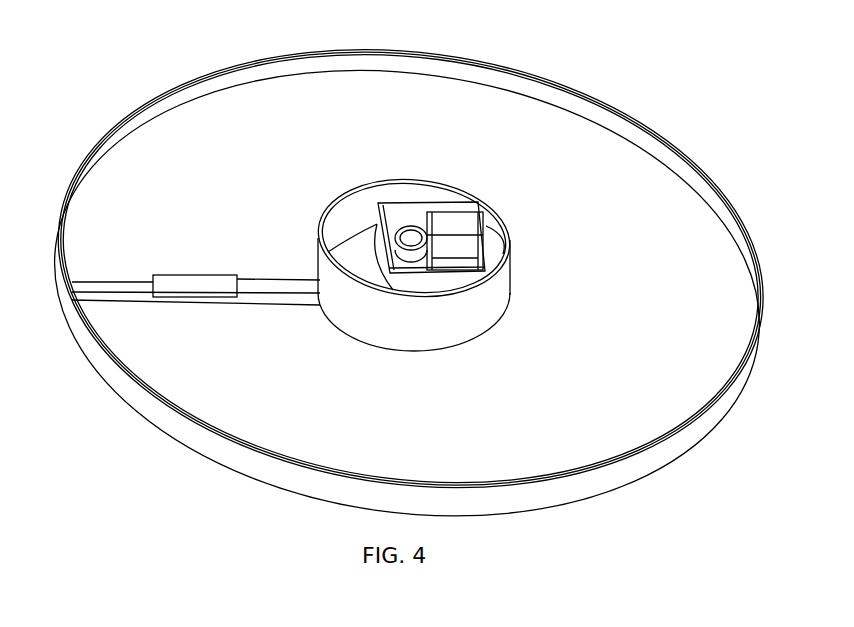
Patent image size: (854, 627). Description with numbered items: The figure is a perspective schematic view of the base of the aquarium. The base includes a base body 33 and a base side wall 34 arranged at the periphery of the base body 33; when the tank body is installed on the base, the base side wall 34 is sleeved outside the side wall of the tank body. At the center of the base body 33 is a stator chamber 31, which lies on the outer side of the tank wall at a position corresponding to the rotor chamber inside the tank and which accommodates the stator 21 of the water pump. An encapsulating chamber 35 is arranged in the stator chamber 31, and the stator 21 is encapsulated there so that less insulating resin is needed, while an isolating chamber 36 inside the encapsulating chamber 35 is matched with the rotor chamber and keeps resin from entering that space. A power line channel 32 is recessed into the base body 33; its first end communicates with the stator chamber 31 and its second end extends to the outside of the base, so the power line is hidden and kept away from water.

The stator 21 is at (413, 238).
The stator chamber 31 is at (422, 320).
The power line channel 32 is at (128, 283).
The base body 33 is at (228, 402).
The base side wall 34 is at (103, 365).
The encapsulating chamber 35 is at (412, 212).
The isolating chamber 36 is at (462, 246).